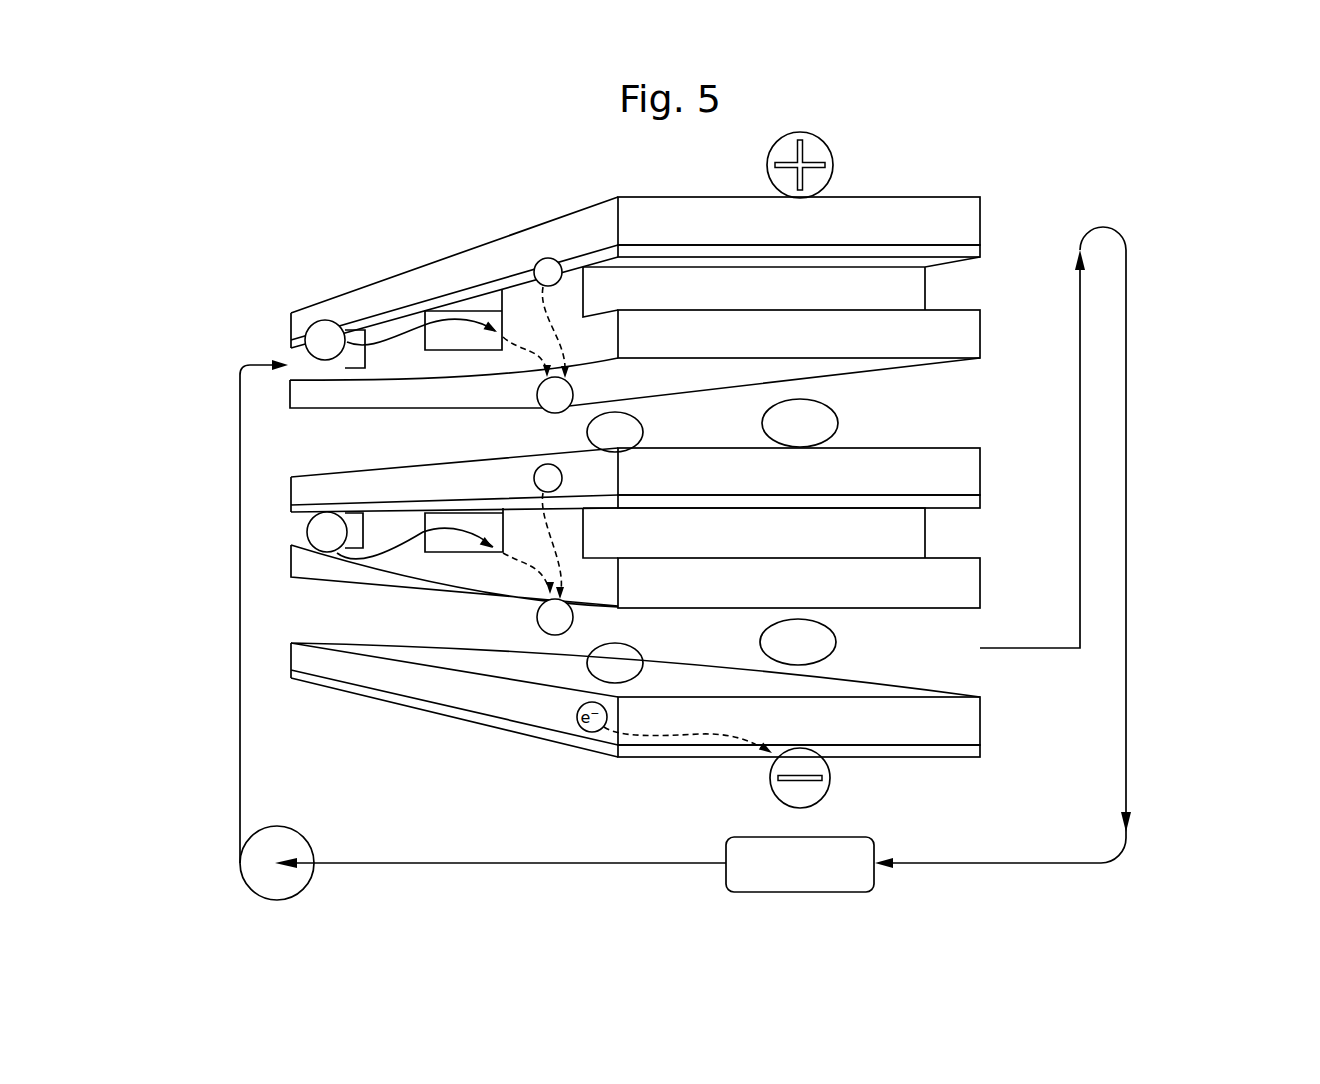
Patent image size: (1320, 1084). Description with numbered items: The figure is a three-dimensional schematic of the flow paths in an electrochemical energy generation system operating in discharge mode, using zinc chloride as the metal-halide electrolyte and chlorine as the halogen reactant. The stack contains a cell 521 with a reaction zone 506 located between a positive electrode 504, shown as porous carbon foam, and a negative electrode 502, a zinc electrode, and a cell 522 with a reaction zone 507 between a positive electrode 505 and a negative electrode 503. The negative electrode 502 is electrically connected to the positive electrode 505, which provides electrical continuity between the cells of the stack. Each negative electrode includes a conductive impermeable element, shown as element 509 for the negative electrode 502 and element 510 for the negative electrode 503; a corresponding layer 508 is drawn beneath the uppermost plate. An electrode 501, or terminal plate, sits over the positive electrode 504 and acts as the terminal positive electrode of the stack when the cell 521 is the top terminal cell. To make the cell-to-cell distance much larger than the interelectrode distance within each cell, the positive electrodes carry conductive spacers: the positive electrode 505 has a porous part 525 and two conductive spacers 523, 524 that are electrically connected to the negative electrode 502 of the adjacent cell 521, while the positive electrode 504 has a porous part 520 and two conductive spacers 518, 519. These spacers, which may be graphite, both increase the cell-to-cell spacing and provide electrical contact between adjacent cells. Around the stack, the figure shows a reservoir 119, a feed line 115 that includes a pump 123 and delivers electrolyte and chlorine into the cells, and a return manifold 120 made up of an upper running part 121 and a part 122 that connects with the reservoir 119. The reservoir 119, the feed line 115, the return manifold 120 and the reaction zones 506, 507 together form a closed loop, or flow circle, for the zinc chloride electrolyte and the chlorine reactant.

The electrode 501 is at (978, 220).
The substrate layer of first zinc electrode 508 is at (978, 253).
The positive electrode 504 is at (983, 257).
The reaction zone 506 is at (896, 416).
The conductive spacer 518 is at (390, 332).
The conductive spacer 519 is at (527, 302).
The porous part 520 is at (445, 373).
The cell 521 is at (217, 348).
The negative electrode 502 is at (978, 470).
The conductive impermeable element 509 is at (978, 503).
The positive electrode 505 is at (983, 508).
The reaction zone 507 is at (896, 651).
The conductive spacer 523 is at (387, 530).
The conductive spacer 524 is at (530, 532).
The porous part 525 is at (445, 583).
The cell 522 is at (217, 515).
The negative electrode 503 is at (978, 716).
The conductive impermeable element 510 is at (978, 750).
The feed line 115 is at (240, 762).
The reservoir 119 is at (810, 892).
The return manifold 120 is at (1195, 405).
The upper running part 121 is at (1080, 427).
The part 122 is at (1126, 467).
The pump 123 is at (305, 838).